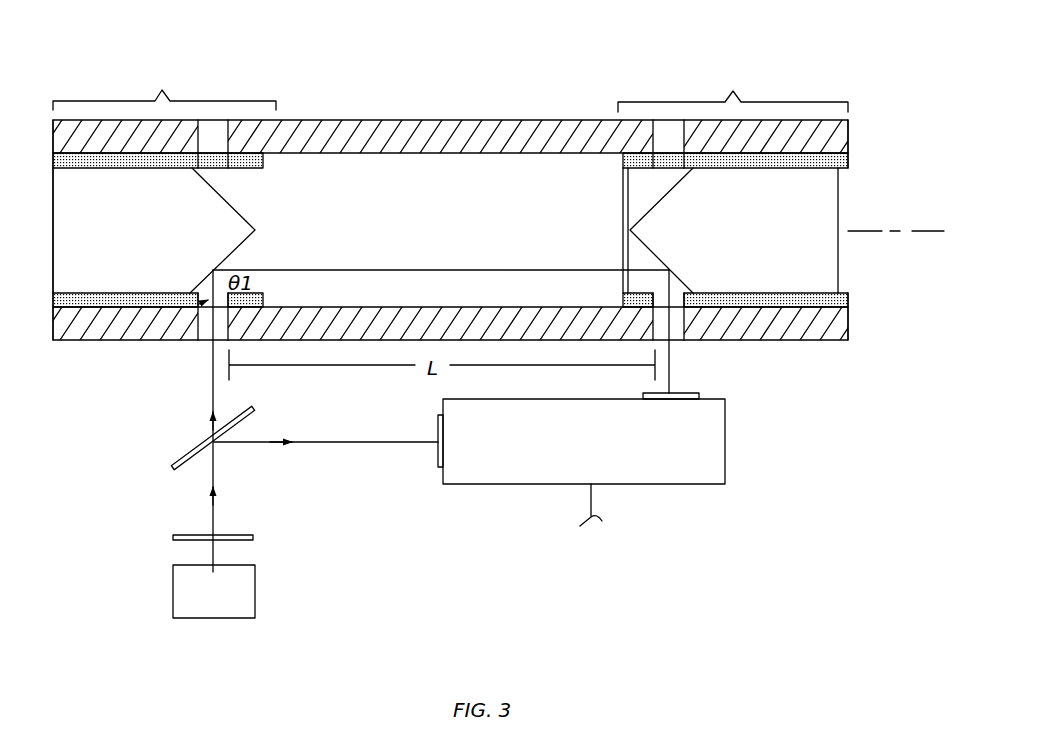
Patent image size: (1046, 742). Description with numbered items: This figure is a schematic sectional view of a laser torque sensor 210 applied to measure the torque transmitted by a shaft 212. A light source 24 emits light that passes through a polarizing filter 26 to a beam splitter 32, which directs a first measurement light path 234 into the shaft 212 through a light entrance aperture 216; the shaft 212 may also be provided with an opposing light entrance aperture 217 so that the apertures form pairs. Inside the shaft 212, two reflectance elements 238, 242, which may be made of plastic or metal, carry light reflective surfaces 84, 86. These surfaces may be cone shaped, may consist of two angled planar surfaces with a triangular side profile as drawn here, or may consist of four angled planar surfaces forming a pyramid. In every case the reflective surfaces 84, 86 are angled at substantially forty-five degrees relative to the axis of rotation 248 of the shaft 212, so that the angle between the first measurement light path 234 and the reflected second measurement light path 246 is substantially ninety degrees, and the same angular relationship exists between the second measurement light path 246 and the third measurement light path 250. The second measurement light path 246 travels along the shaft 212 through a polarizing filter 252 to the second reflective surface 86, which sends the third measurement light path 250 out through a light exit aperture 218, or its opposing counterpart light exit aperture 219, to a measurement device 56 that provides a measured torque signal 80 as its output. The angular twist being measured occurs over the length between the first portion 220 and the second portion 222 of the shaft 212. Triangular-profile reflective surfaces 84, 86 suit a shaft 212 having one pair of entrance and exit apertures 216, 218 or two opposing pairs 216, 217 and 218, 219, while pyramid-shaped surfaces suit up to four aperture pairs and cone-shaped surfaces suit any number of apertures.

The shaft 212 is at (848, 132).
The light entrance aperture 217 is at (225, 120).
The light exit aperture 219 is at (657, 113).
The light entrance aperture 216 is at (205, 343).
The light exit aperture 218 is at (677, 343).
The first portion of the shaft 220 is at (163, 91).
The second portion of the shaft 222 is at (734, 92).
The reflectance element 238 is at (99, 230).
The reflectance element 242 is at (780, 230).
The light reflective surface 84 is at (240, 212).
The light reflective surface 86 is at (650, 250).
The polarizing filter 252 is at (623, 190).
The second measurement light path 246 is at (358, 270).
The axis of rotation 248 is at (898, 230).
The first measurement light path 234 is at (213, 396).
The beam splitter 32 is at (178, 462).
The polarizing filter 26 is at (193, 534).
The light source 24 is at (214, 591).
The measurement device 56 is at (469, 441).
The third measurement light path 250 is at (671, 378).
The measured torque signal 80 is at (594, 512).
The laser torque sensor 210 is at (774, 496).